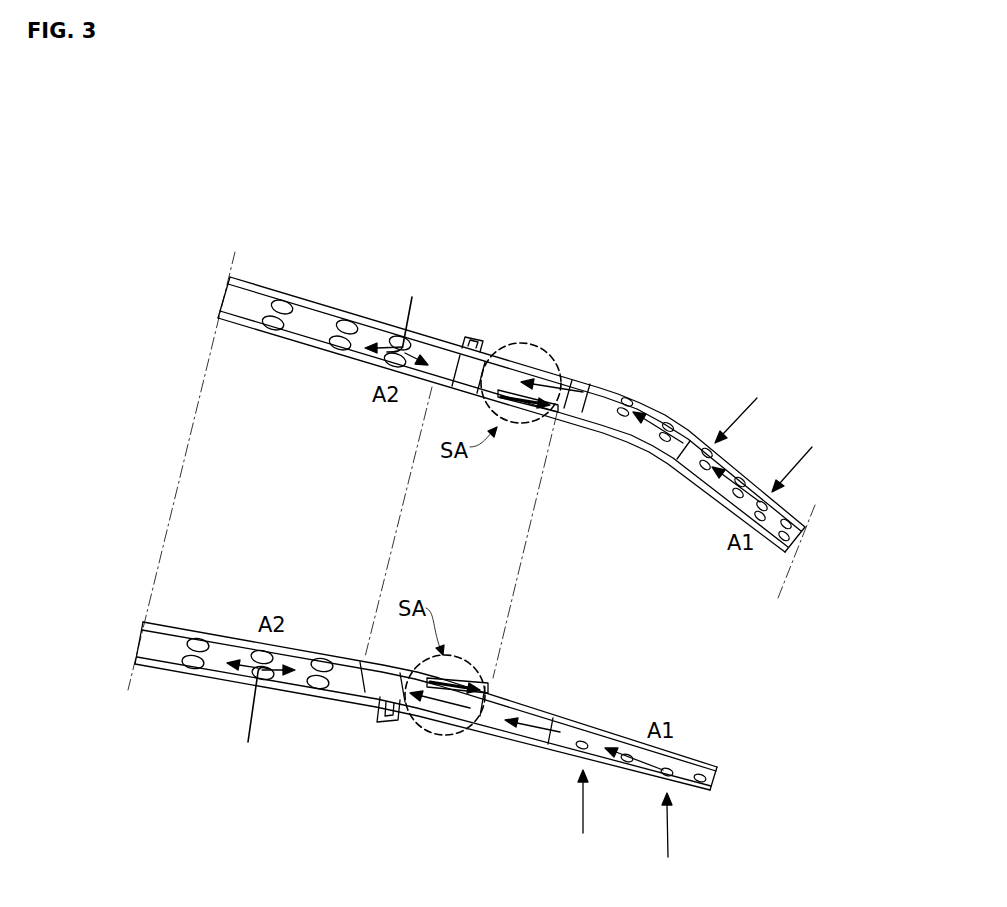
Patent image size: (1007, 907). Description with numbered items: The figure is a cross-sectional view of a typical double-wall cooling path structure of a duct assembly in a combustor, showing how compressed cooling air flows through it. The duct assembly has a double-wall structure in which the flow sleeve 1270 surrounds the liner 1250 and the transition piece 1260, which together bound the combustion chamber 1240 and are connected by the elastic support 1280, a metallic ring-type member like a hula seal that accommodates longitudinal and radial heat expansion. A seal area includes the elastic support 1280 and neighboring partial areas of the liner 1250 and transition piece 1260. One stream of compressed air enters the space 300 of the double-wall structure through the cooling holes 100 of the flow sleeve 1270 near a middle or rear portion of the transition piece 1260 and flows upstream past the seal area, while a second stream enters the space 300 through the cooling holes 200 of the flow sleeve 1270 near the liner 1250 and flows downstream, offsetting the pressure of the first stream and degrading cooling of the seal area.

The cooling holes 100 is at (570, 758).
The cooling holes 200 is at (317, 688).
The space 300 is at (795, 537).
The combustion chamber 1240 is at (263, 445).
The liner 1250 is at (318, 342).
The transition piece 1260 is at (593, 377).
The flow sleeve 1270 is at (627, 395).
The elastic support 1280 is at (517, 377).